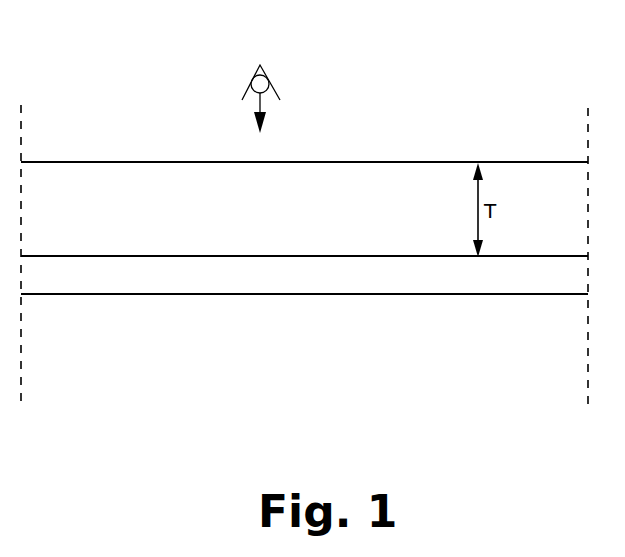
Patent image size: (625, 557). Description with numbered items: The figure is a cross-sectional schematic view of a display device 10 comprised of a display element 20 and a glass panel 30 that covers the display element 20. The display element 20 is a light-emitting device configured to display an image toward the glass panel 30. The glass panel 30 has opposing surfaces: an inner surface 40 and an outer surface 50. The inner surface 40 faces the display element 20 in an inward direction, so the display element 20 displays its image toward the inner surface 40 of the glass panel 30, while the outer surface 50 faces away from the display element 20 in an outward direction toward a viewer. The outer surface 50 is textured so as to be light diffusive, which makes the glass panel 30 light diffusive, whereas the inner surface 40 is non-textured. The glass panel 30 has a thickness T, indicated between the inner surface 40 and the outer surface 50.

The display device 10 is at (519, 78).
The display element 20 is at (226, 282).
The glass panel 30 is at (149, 180).
The inner surface 40 is at (385, 257).
The outer surface 50 is at (345, 162).